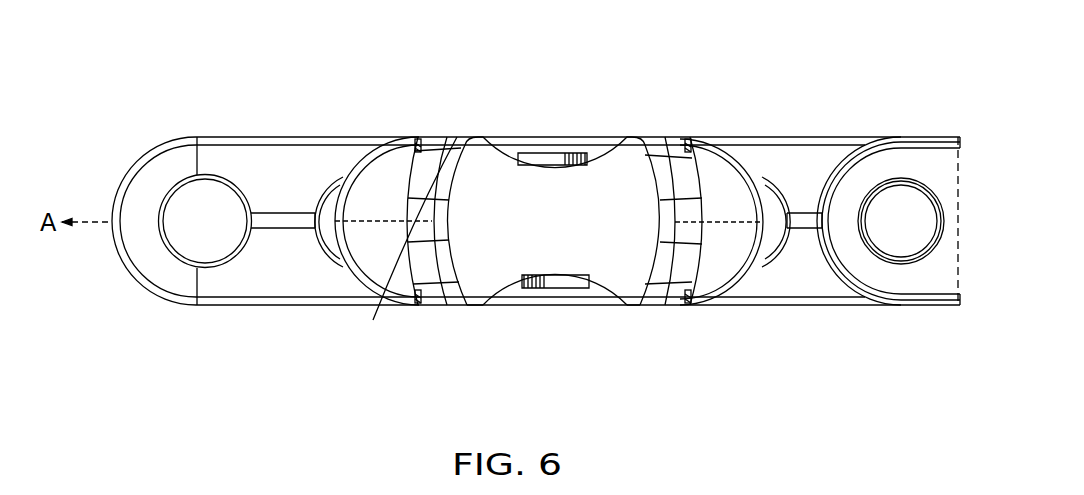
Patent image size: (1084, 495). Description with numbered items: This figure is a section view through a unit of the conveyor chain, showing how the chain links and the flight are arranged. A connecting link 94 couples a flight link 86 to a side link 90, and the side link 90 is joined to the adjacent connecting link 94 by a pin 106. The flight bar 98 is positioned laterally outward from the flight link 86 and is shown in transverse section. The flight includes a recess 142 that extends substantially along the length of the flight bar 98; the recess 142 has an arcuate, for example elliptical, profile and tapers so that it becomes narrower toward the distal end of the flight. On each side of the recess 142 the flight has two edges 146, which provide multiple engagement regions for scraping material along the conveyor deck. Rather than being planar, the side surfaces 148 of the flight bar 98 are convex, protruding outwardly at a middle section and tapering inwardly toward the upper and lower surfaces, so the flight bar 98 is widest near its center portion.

The flight link 86 is at (478, 173).
The side link 90 is at (935, 167).
The connecting link 94 is at (242, 152).
The flight bar 98 is at (690, 112).
The pin 106 is at (900, 238).
The recess 142 is at (553, 153).
The edge 146 is at (478, 137).
The side surface 148 is at (436, 226).